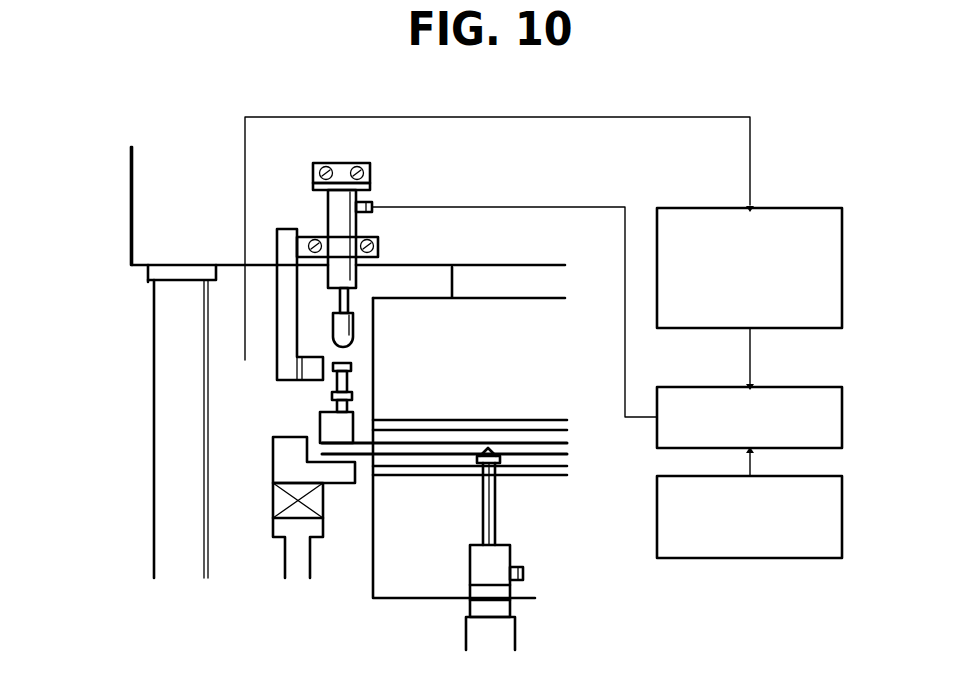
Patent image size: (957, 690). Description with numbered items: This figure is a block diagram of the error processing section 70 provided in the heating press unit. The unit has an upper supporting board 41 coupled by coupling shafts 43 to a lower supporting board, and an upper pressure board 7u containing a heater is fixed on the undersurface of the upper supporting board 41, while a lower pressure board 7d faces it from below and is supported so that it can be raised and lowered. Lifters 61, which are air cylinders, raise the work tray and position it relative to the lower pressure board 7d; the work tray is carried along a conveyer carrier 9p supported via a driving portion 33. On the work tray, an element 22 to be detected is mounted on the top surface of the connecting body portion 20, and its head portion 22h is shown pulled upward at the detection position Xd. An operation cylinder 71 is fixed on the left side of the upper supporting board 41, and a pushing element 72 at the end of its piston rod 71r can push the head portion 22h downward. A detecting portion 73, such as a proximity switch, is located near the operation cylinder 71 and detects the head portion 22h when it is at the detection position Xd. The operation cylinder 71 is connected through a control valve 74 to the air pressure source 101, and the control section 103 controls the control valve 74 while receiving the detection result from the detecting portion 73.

The error processing section 70 is at (762, 97).
The control section 103 is at (813, 208).
The control valve 74 is at (820, 387).
The air pressure source 101 is at (792, 558).
The operation cylinder 71 is at (358, 222).
The piston rod 71r is at (349, 298).
The pushing element 72 is at (354, 323).
The upper pressure board 7u is at (520, 298).
The head portion 22h is at (352, 365).
The element to be detected 22 is at (357, 395).
The detection position Xd is at (360, 407).
The detecting portion 73 is at (305, 382).
The connecting body portion 20 is at (320, 421).
The conveyer carrier 9p is at (273, 465).
The driving portion 33 is at (277, 507).
The upper supporting board 41 is at (132, 243).
The coupling shaft 43 is at (153, 332).
The lower pressure board 7d is at (405, 600).
The lifter 61 is at (528, 545).